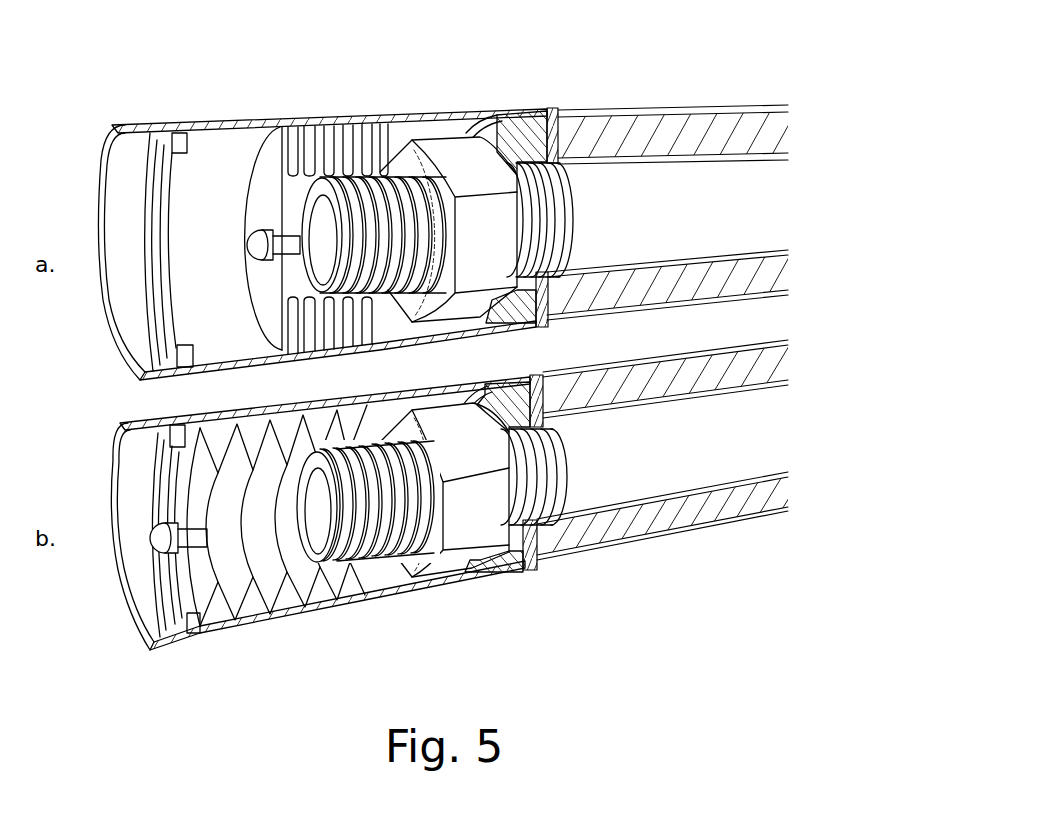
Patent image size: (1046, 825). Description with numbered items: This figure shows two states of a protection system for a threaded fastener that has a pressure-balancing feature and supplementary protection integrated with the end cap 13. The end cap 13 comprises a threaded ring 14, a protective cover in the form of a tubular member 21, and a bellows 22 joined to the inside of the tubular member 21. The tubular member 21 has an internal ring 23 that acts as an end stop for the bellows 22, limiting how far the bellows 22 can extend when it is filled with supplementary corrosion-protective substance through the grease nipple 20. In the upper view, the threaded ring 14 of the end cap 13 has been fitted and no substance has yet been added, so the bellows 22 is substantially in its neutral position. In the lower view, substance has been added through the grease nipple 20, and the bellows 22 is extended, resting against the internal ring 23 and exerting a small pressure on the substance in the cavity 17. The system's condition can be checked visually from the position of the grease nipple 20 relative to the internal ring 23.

The end cap 13 is at (443, 112).
The threaded ring 14 is at (508, 113).
The cavity 17 is at (378, 130).
The grease nipple 20 is at (262, 238).
The tubular member 21 is at (268, 160).
The bellows 22 is at (180, 128).
The internal ring 23 is at (118, 126).